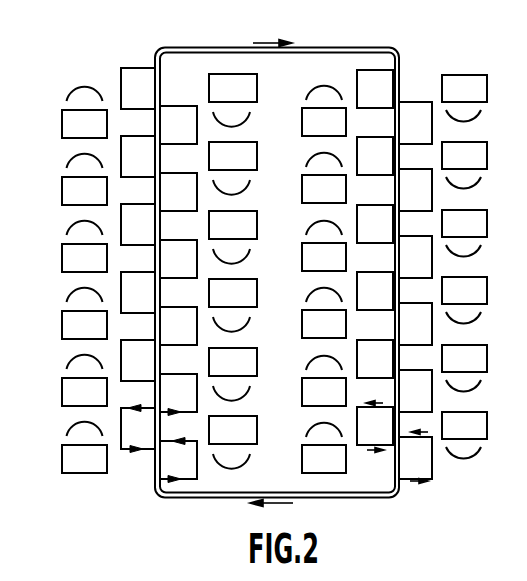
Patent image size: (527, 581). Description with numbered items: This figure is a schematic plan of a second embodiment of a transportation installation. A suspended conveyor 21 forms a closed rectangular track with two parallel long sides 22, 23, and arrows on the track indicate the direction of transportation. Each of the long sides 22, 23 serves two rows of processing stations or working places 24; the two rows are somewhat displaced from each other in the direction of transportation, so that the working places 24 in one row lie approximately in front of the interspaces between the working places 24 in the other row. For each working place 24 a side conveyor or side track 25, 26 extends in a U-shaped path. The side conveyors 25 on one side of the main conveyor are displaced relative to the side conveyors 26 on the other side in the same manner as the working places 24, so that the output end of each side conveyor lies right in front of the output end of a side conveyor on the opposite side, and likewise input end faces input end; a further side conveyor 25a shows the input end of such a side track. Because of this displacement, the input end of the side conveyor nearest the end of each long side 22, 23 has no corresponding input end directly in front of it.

The suspended conveyor 21 is at (307, 48).
The long side 22 is at (157, 163).
The long side 23 is at (397, 195).
The working place 24 is at (75, 263).
The side conveyor 25a is at (172, 374).
The side conveyor 25 is at (190, 479).
The side conveyor 26 is at (121, 409).